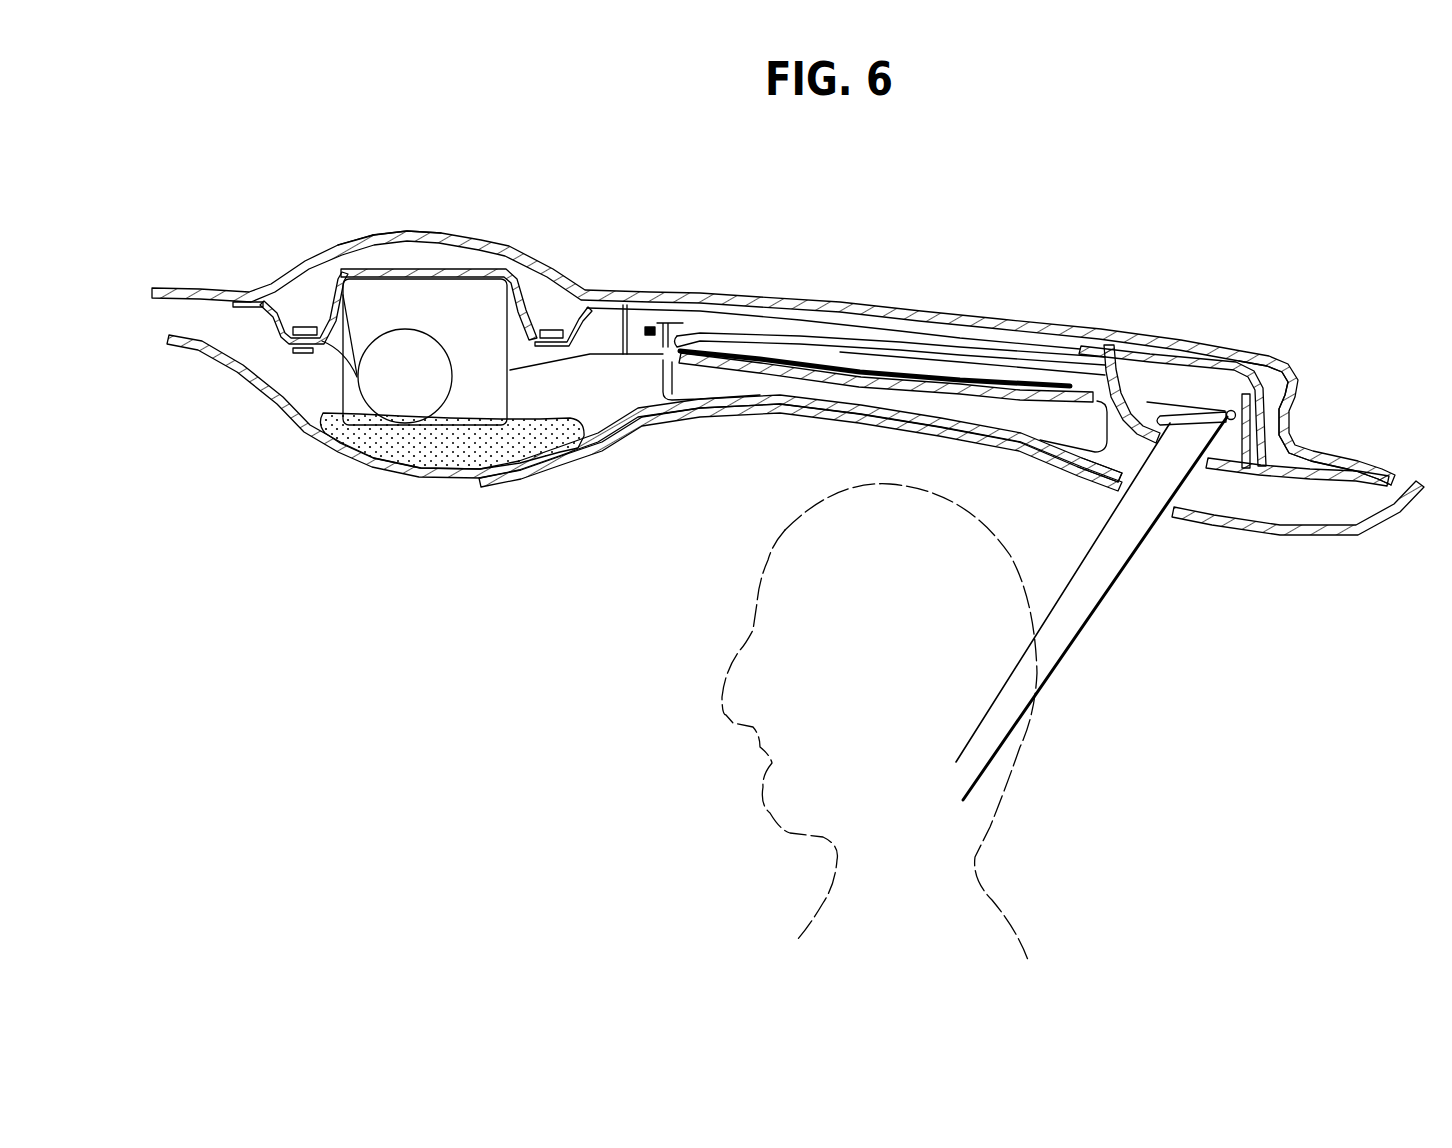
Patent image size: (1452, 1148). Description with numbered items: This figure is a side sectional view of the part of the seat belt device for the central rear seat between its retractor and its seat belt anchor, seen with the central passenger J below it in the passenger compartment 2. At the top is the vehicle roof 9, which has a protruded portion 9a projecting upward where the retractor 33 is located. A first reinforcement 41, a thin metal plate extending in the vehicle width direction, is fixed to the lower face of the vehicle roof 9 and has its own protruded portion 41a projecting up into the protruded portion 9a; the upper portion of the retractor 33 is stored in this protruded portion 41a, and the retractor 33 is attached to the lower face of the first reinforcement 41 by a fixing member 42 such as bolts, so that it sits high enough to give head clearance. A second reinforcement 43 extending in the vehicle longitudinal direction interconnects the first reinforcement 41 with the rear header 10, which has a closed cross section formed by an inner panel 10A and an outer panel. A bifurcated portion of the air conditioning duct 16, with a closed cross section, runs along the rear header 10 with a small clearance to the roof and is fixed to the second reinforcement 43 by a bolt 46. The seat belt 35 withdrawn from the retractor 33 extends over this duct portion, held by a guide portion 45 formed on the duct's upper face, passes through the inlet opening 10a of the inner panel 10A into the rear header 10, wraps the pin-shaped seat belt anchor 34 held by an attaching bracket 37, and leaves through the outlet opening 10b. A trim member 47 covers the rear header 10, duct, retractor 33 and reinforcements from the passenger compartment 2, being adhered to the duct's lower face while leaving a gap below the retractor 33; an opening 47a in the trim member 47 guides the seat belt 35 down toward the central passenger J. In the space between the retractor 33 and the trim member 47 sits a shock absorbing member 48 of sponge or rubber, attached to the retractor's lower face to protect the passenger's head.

The vehicle roof 9 is at (166, 289).
The protruded portion 9a is at (436, 233).
The first reinforcement 41 is at (327, 290).
The protruded portion 41a is at (390, 269).
The fixing member 42 is at (302, 354).
The retractor 33 is at (470, 295).
The bolt 46 is at (654, 328).
The seat belt 35 is at (627, 347).
The guide portion 45 is at (700, 355).
The second reinforcement 43 is at (887, 335).
The air conditioning duct 16 is at (687, 377).
The trim member 47 is at (250, 382).
The opening 47a is at (1120, 487).
The shock absorbing member 48 is at (433, 453).
The inlet opening 10a is at (1108, 358).
The seat belt anchor 34 is at (1190, 412).
The rear header 10 is at (1268, 342).
The attaching bracket 37 is at (1251, 417).
The outlet opening 10b is at (1190, 470).
The inner panel 10A is at (1220, 515).
The central passenger J is at (758, 790).
The passenger compartment 2 is at (396, 716).